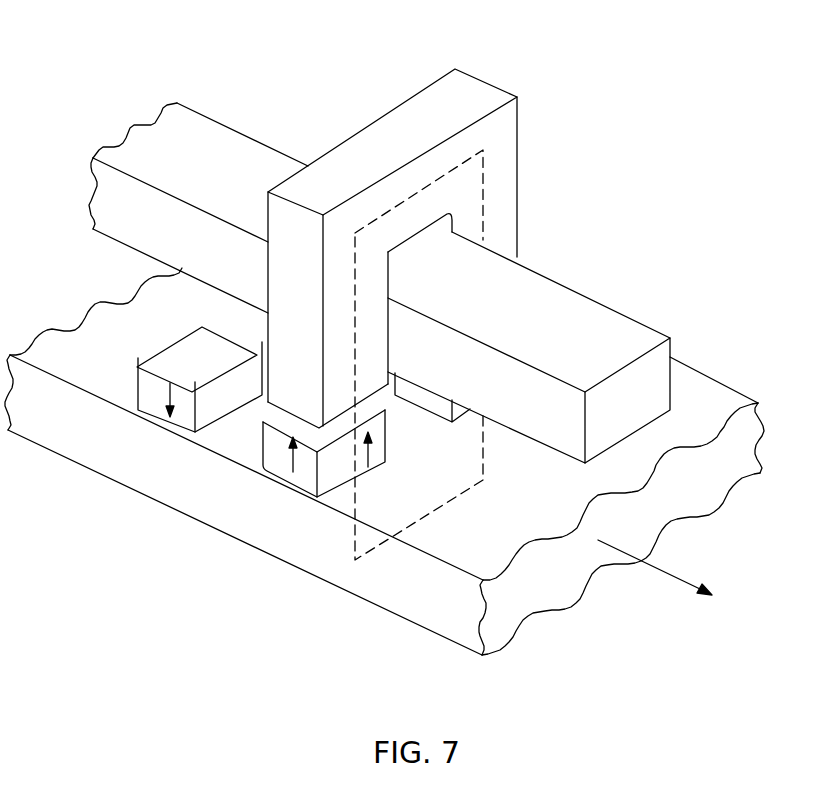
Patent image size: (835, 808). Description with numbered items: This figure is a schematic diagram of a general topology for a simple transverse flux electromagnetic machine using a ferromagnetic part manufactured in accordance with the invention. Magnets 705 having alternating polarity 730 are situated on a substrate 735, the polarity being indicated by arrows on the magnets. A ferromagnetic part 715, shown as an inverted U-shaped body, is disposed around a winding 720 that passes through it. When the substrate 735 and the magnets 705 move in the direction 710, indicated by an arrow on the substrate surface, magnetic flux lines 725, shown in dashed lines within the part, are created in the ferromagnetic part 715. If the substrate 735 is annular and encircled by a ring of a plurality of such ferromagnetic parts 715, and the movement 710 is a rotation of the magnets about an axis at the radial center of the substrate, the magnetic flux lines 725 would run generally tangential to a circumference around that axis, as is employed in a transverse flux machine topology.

The magnets 705 is at (128, 388).
The direction of movement 710 is at (644, 574).
The ferromagnetic part 715 is at (498, 77).
The winding 720 is at (603, 290).
The magnetic flux lines 725 is at (496, 193).
The alternating polarity 730 is at (156, 399).
The substrate 735 is at (718, 368).